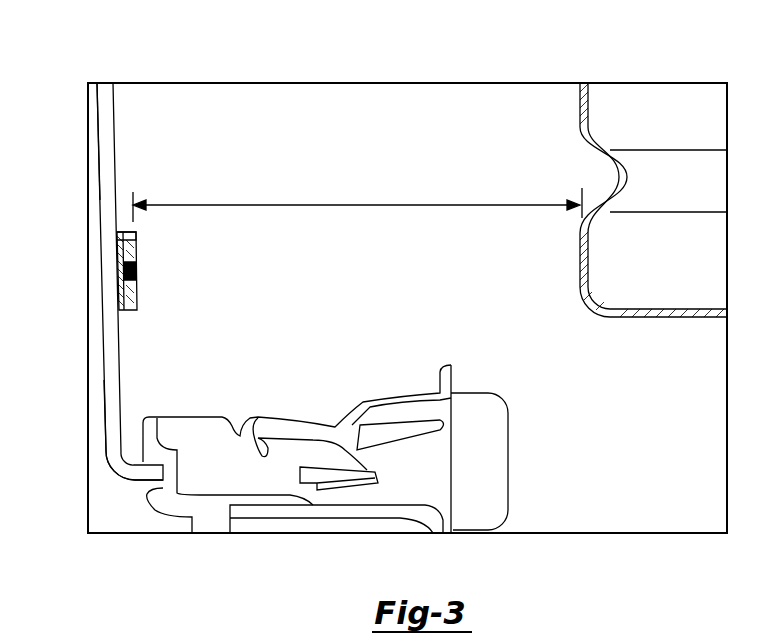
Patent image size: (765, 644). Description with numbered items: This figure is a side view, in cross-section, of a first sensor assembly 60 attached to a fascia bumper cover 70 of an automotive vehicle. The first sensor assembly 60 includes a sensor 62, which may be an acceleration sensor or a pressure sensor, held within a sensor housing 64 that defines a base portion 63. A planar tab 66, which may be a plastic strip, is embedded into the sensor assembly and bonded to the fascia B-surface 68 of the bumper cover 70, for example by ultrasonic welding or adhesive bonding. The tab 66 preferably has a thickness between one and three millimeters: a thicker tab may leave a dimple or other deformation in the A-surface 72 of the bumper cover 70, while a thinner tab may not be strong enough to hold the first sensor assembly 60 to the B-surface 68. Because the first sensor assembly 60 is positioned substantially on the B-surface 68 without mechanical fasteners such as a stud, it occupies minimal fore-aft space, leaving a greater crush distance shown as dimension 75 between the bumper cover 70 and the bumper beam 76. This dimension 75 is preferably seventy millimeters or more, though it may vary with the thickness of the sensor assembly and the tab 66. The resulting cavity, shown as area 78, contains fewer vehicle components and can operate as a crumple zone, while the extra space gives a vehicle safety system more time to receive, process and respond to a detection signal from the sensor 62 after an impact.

The first sensor assembly 60 is at (123, 289).
The sensor 62 is at (123, 278).
The base portion 63 is at (128, 240).
The sensor housing 64 is at (128, 235).
The planar tab 66 is at (122, 246).
The fascia B-surface 68 is at (115, 131).
The fascia bumper cover 70 is at (112, 111).
The A-surface 72 is at (107, 415).
The dimension 75 is at (347, 205).
The bumper beam 76 is at (657, 100).
The area 78 is at (455, 121).